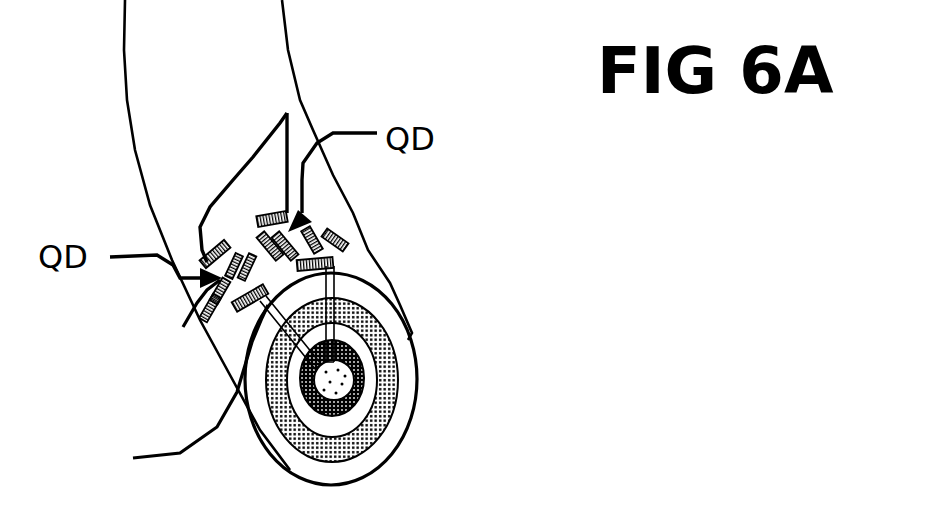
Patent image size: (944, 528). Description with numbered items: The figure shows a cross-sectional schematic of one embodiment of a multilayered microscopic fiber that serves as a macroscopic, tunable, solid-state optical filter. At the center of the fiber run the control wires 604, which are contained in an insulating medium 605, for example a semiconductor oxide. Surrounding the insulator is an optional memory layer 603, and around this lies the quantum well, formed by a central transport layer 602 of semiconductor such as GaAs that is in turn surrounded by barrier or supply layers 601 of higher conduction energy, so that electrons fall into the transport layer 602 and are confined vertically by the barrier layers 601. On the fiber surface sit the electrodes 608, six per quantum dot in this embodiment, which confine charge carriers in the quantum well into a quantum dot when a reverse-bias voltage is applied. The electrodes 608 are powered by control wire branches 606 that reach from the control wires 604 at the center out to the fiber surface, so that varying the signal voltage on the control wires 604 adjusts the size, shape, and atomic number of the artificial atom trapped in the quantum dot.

The barrier layers 601 is at (395, 322).
The transport layer 602 is at (385, 345).
The memory layer 603 is at (357, 366).
The control wires 604 is at (338, 383).
The insulating medium 605 is at (335, 392).
The control wire branches 606 is at (332, 286).
The surface electrodes 608 is at (287, 113).